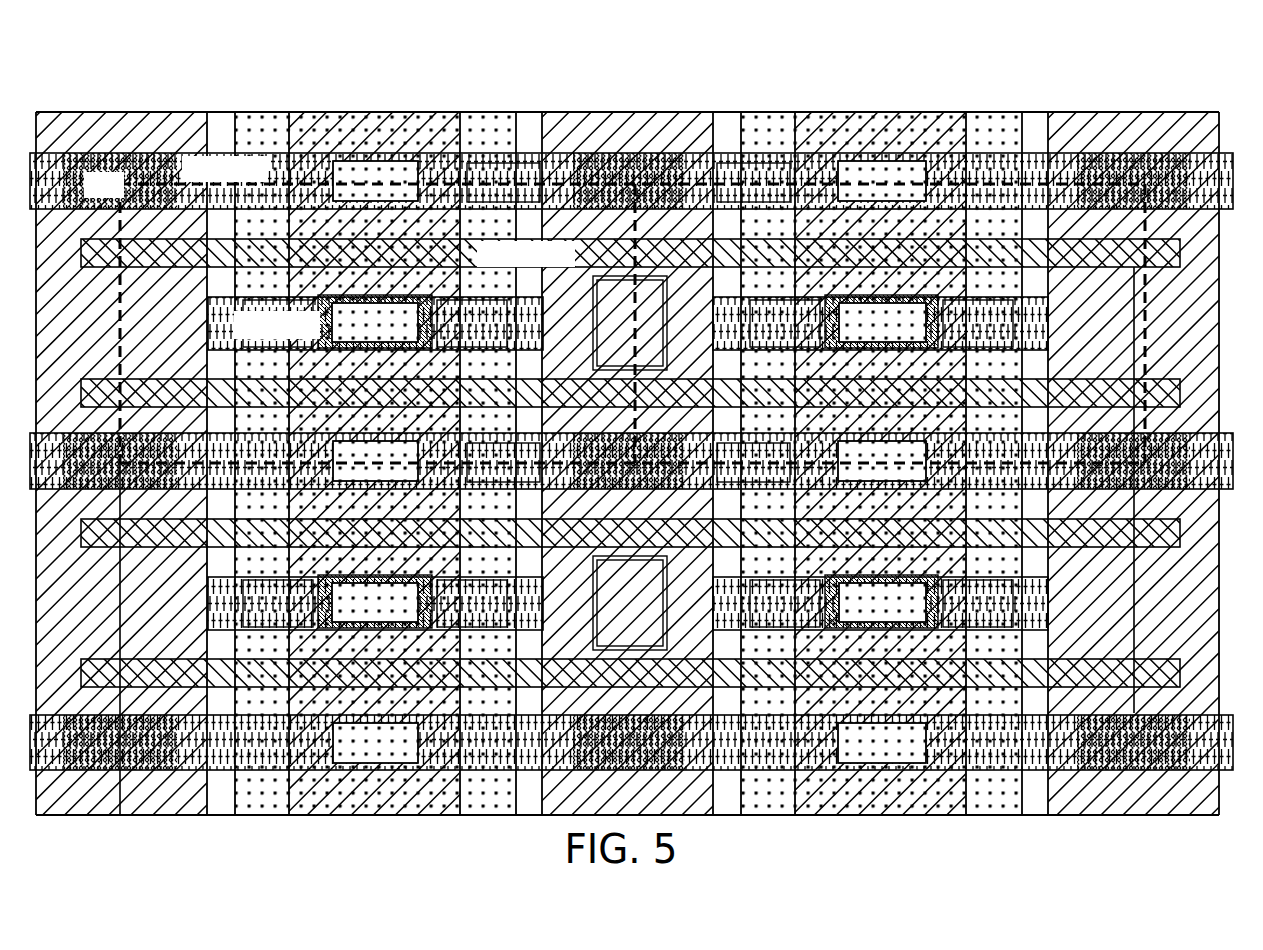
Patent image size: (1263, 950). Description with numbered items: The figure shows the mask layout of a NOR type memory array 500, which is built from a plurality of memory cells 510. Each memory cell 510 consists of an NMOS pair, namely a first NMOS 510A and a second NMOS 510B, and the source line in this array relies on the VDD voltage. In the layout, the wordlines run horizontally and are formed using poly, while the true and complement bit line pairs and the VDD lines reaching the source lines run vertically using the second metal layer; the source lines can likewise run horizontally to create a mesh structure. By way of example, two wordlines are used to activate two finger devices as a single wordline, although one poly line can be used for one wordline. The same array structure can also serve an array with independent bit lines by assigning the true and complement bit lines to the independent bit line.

The NOR type memory array 500 is at (636, 417).
The memory cell 510 is at (629, 114).
The NMOS 510A is at (383, 185).
The NMOS 510B is at (854, 141).